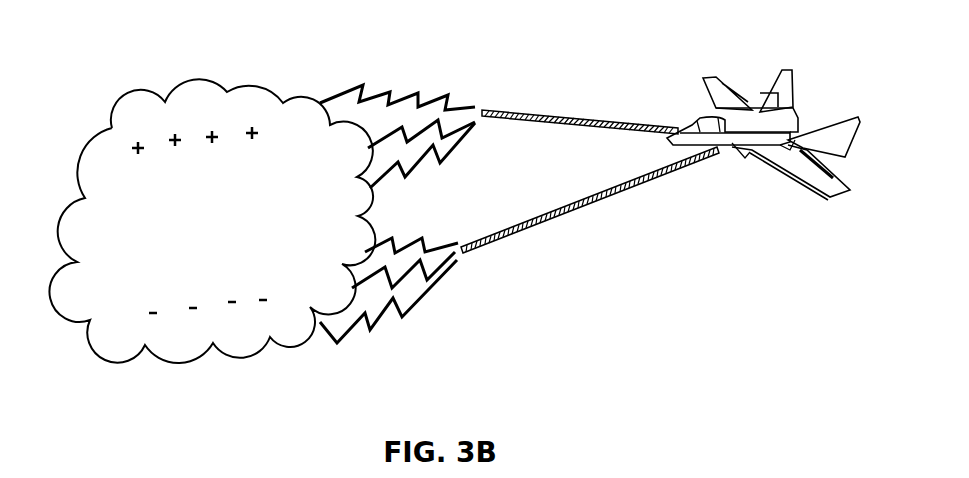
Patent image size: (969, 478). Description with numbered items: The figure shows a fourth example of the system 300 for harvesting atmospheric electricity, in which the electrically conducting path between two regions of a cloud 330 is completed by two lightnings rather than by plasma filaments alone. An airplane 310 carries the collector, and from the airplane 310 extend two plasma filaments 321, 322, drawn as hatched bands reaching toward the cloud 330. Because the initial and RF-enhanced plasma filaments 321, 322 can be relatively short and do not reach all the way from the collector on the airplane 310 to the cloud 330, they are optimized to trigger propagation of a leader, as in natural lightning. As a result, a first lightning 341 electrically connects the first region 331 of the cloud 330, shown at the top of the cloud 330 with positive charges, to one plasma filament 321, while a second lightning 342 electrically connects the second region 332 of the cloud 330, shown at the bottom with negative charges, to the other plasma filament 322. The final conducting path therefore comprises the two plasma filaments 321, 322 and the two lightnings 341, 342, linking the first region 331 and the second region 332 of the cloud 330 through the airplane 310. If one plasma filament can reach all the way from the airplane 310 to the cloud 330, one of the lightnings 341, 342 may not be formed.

The system for harvesting atmospheric electricity 300 is at (718, 316).
The airplane 310 is at (818, 187).
The plasma filament 321 is at (513, 113).
The plasma filament 322 is at (522, 228).
The cloud 330 is at (181, 218).
The first region of the cloud 331 is at (206, 98).
The second region of the cloud 332 is at (205, 330).
The first lightning 341 is at (373, 82).
The second lightning 342 is at (390, 320).